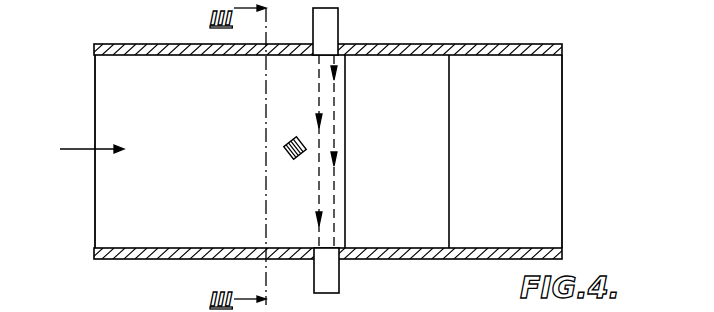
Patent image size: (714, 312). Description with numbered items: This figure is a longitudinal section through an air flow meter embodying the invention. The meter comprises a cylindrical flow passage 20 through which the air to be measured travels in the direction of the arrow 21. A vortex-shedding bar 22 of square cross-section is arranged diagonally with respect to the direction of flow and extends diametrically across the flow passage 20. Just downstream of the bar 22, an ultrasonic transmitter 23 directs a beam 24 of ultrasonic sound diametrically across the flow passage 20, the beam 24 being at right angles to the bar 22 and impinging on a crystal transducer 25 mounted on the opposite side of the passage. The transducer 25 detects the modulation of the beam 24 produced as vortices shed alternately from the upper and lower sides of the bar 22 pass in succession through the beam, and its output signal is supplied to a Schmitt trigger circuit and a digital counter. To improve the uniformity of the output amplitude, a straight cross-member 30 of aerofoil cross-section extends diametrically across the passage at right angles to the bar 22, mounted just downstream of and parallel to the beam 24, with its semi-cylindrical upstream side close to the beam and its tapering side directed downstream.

The flow passage 20 is at (148, 44).
The arrow 21 is at (80, 148).
The vortex-shedding bar 22 is at (288, 162).
The ultrasonic transmitter 23 is at (338, 22).
The beam 24 is at (316, 112).
The crystal transducer 25 is at (339, 281).
The cross-member 30 is at (437, 110).